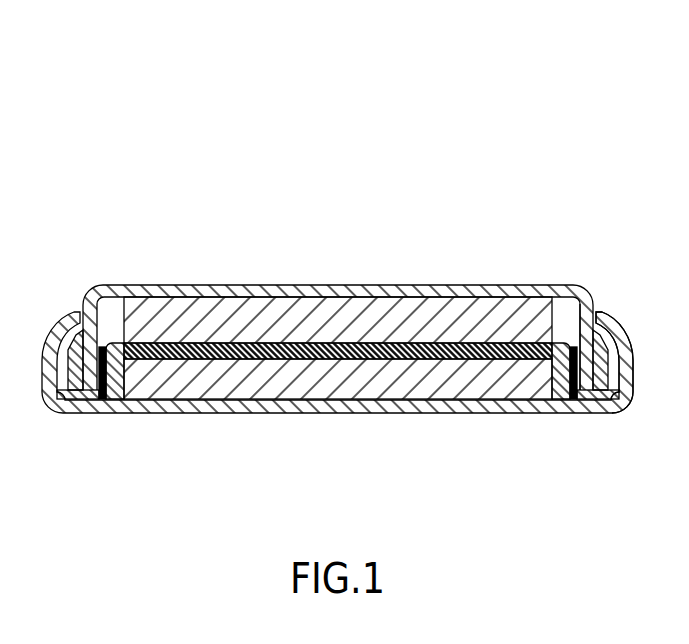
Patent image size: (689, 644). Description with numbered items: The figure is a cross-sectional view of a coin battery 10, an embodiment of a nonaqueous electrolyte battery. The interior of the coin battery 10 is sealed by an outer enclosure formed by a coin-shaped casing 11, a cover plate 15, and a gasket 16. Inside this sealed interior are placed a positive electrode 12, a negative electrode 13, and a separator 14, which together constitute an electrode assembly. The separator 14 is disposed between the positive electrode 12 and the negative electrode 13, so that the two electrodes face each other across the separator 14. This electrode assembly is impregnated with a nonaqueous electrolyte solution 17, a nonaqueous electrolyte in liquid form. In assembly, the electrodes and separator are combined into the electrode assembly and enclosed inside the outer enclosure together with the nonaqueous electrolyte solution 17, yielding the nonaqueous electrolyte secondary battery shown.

The coin battery 10 is at (493, 120).
The coin-shaped casing 11 is at (162, 406).
The positive electrode 12 is at (478, 378).
The negative electrode 13 is at (233, 328).
The separator 14 is at (505, 348).
The cover plate 15 is at (125, 290).
The gasket 16 is at (604, 413).
The nonaqueous electrolyte solution 17 is at (568, 330).